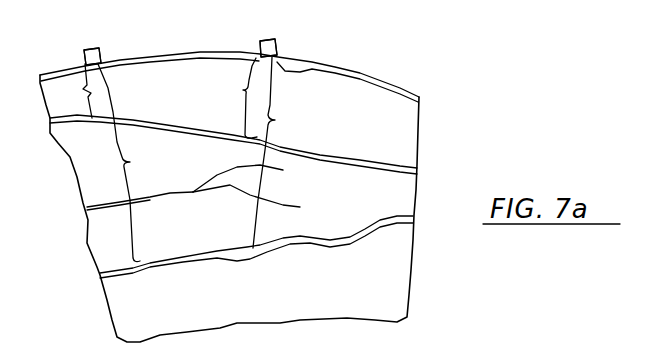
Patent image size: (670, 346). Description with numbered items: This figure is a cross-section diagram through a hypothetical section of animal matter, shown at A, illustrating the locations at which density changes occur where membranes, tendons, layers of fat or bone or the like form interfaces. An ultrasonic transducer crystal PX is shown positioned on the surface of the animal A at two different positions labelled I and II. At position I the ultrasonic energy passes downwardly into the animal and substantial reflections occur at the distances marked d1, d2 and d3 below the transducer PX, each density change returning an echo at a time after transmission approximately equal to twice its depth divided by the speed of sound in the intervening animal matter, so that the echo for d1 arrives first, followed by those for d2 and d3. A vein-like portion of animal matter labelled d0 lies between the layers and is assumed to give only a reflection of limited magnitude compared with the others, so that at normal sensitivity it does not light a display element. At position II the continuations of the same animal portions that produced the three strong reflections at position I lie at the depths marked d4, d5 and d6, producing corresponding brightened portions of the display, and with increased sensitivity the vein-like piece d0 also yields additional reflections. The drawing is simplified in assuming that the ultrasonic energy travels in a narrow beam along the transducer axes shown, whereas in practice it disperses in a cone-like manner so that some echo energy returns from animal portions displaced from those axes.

The cross-section of animal A is at (77, 182).
The ultrasonic transducer crystal PX is at (158, 51).
The first transducer position I is at (83, 31).
The second transducer position II is at (268, 23).
The vein-like portion of animal matter d0 is at (196, 193).
The distance to first density change at position I d1 is at (116, 38).
The distance to second density change at position I d2 is at (76, 91).
The distance to third density change at position I d3 is at (127, 163).
The distance to first density change at position II d4 is at (315, 32).
The distance to second density change at position II d5 is at (232, 98).
The distance to third density change at position II d6 is at (277, 152).